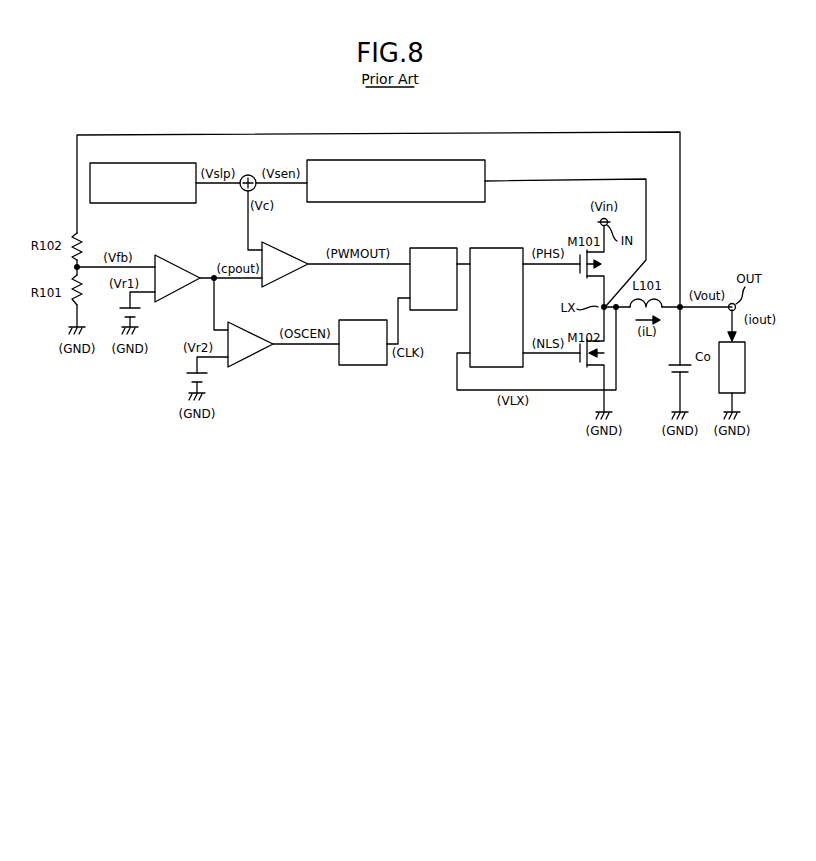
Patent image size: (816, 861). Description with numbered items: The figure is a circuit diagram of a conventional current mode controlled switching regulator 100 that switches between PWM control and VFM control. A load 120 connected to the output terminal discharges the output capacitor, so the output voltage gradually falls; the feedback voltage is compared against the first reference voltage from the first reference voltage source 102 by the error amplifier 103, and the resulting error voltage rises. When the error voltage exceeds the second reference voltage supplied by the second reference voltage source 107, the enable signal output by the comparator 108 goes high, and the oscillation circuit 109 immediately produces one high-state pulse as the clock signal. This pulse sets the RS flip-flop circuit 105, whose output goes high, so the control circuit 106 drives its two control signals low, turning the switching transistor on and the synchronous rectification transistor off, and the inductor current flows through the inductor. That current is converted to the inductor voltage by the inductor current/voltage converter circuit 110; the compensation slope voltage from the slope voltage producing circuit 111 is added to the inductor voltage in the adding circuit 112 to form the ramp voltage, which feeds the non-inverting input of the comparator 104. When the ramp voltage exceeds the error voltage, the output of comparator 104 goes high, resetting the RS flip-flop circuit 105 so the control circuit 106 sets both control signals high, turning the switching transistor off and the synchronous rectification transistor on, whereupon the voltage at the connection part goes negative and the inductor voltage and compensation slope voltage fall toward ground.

The current mode controlled switching regulator 100 is at (587, 112).
The first reference voltage source 102 is at (145, 315).
The error amplifier 103 is at (174, 256).
The comparator 104 is at (284, 242).
The RS flip-flop circuit 105 is at (433, 247).
The control circuit 106 is at (495, 247).
The second reference voltage source 107 is at (186, 380).
The comparator 108 is at (251, 323).
The oscillation circuit 109 is at (363, 320).
The inductor current/voltage converter circuit 110 is at (357, 202).
The slope voltage producing circuit 111 is at (143, 203).
The adding circuit 112 is at (241, 188).
The load 120 is at (746, 372).